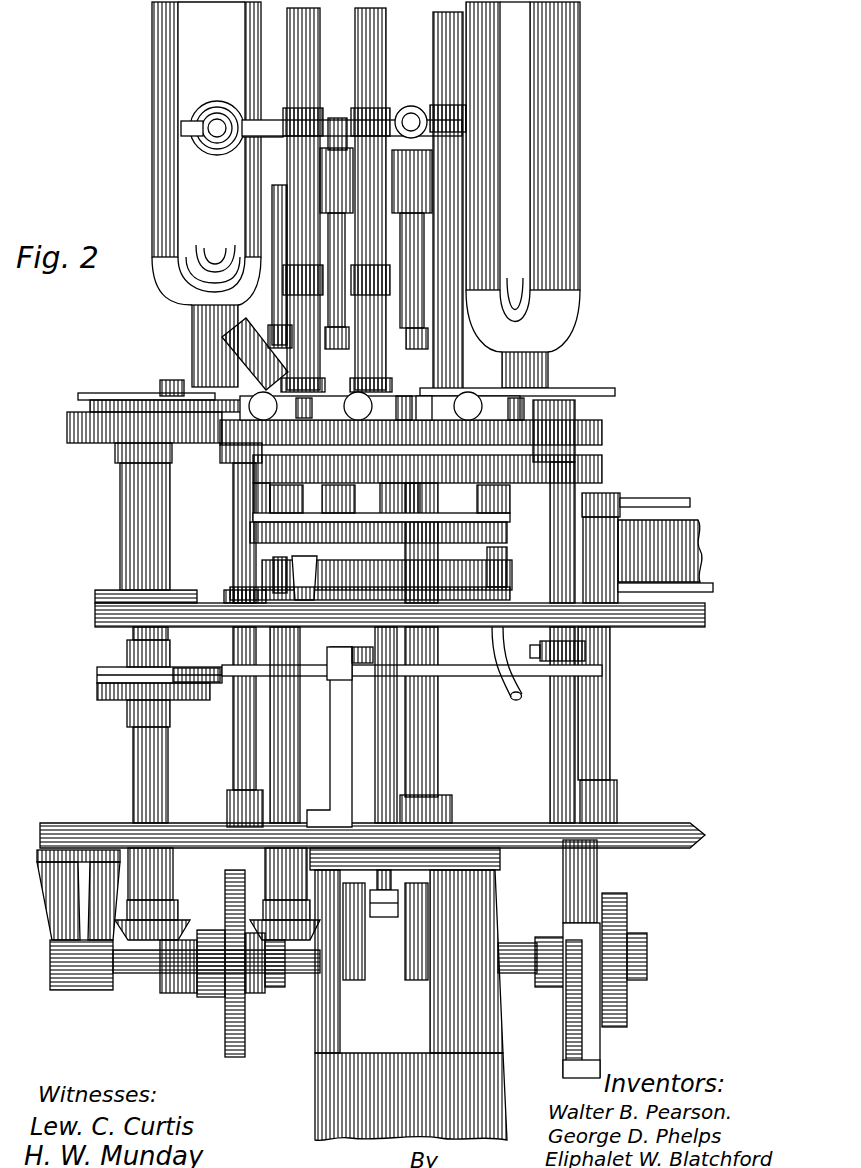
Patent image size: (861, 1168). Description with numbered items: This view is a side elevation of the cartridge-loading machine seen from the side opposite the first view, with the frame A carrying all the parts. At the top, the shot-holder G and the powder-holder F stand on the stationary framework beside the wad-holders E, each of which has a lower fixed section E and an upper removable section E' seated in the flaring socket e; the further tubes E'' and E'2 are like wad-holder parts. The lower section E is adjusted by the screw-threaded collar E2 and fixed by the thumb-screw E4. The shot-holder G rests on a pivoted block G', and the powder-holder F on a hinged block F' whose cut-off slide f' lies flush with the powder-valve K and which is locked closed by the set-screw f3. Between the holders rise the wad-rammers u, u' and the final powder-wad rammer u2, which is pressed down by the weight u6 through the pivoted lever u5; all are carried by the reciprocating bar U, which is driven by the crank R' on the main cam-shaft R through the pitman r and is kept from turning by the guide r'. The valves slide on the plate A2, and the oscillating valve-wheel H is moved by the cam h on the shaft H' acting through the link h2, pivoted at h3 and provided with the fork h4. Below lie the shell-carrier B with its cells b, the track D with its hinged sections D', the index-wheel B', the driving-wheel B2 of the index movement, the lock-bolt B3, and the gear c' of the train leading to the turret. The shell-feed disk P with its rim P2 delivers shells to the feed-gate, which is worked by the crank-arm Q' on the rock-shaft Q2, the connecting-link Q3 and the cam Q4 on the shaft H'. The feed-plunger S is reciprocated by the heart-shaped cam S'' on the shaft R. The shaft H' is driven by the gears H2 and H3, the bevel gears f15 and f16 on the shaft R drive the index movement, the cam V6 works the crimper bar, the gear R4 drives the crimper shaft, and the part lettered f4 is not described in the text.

The shot-holder G is at (220, 196).
The weight u6 is at (216, 152).
The pivoted lever u5 is at (256, 142).
The removable section E' is at (308, 200).
The final powder-wad rammer u2 is at (279, 300).
The plunger rod E'' is at (382, 200).
The plunger rod E'2 is at (455, 201).
The flaring socket e is at (374, 112).
The reciprocating bar U is at (386, 470).
The wad-rammer u' is at (337, 349).
The wad-rammer u is at (453, 249).
The powder-holder F is at (523, 195).
The fork h4 is at (146, 386).
The pivoted block G' is at (165, 375).
The link h2 is at (170, 396).
The cam h is at (144, 427).
The movable block F' is at (420, 426).
The cut-off slide f' is at (526, 388).
The set-screw E4 is at (365, 406).
The screw-threaded collar E2 is at (310, 408).
The powder-valve K is at (509, 409).
The pivot h3 is at (404, 398).
The valve-operating wheel H is at (424, 408).
The wad-holder E is at (400, 370).
The plate A2 is at (255, 443).
The cam-shaft H' is at (154, 681).
The rock-shaft Q2 is at (562, 705).
The shell-carrier B is at (427, 469).
The cells b is at (390, 499).
The lock-bolt B3 is at (272, 556).
The removable track section D' is at (504, 534).
The track D is at (387, 566).
The index-wheel B' is at (407, 553).
The set-screw f3 is at (290, 582).
The gear c' is at (370, 595).
The rim P2 is at (642, 548).
The shell-feed disk P is at (710, 590).
The frame A is at (690, 627).
The connecting-link Q3 is at (98, 672).
The cam Q4 is at (112, 701).
The crank-arm Q' is at (588, 653).
The driving-wheel B2 is at (262, 612).
The column f4 is at (293, 769).
The guide r' is at (340, 737).
The pitman r is at (373, 725).
The gear H2 is at (146, 942).
The gear H3 is at (183, 995).
The cam V6 is at (226, 1044).
The bevel-gear f16 is at (255, 995).
The bevel-gear f15 is at (294, 942).
The crank R' is at (385, 925).
The main cam-shaft R is at (531, 952).
The feed-plunger S is at (563, 881).
The heart-shaped cam S'' is at (566, 1000).
The gear R4 is at (621, 905).